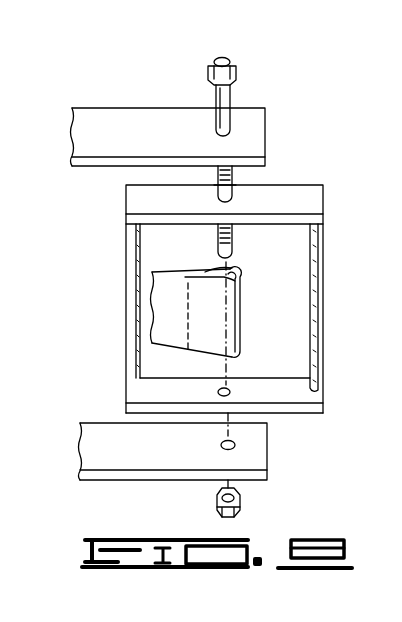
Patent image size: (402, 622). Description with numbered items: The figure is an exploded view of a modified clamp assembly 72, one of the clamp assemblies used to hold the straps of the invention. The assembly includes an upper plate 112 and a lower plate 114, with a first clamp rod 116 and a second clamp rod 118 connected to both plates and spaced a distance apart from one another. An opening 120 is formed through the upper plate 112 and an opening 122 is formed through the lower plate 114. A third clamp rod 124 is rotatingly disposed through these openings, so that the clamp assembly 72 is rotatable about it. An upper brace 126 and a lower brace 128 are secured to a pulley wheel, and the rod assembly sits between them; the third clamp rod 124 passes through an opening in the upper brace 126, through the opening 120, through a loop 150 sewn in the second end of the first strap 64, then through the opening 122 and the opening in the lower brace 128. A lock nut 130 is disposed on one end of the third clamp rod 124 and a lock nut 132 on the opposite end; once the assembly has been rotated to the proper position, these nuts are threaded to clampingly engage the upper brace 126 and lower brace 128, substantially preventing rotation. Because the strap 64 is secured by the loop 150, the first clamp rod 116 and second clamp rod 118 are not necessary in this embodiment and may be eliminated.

The upper brace 126 is at (110, 122).
The lock nut 130 is at (232, 62).
The clamp assembly 72 is at (267, 97).
The third clamp rod 124 is at (229, 187).
The upper plate 112 is at (302, 203).
The opening 120 is at (219, 201).
The first clamp rod 116 is at (135, 330).
The second clamp rod 118 is at (312, 298).
The lower plate 114 is at (310, 412).
The opening 122 is at (229, 388).
The first strap 64 is at (165, 283).
The loop 150 is at (238, 279).
The lower brace 128 is at (136, 440).
The lock nut 132 is at (243, 505).